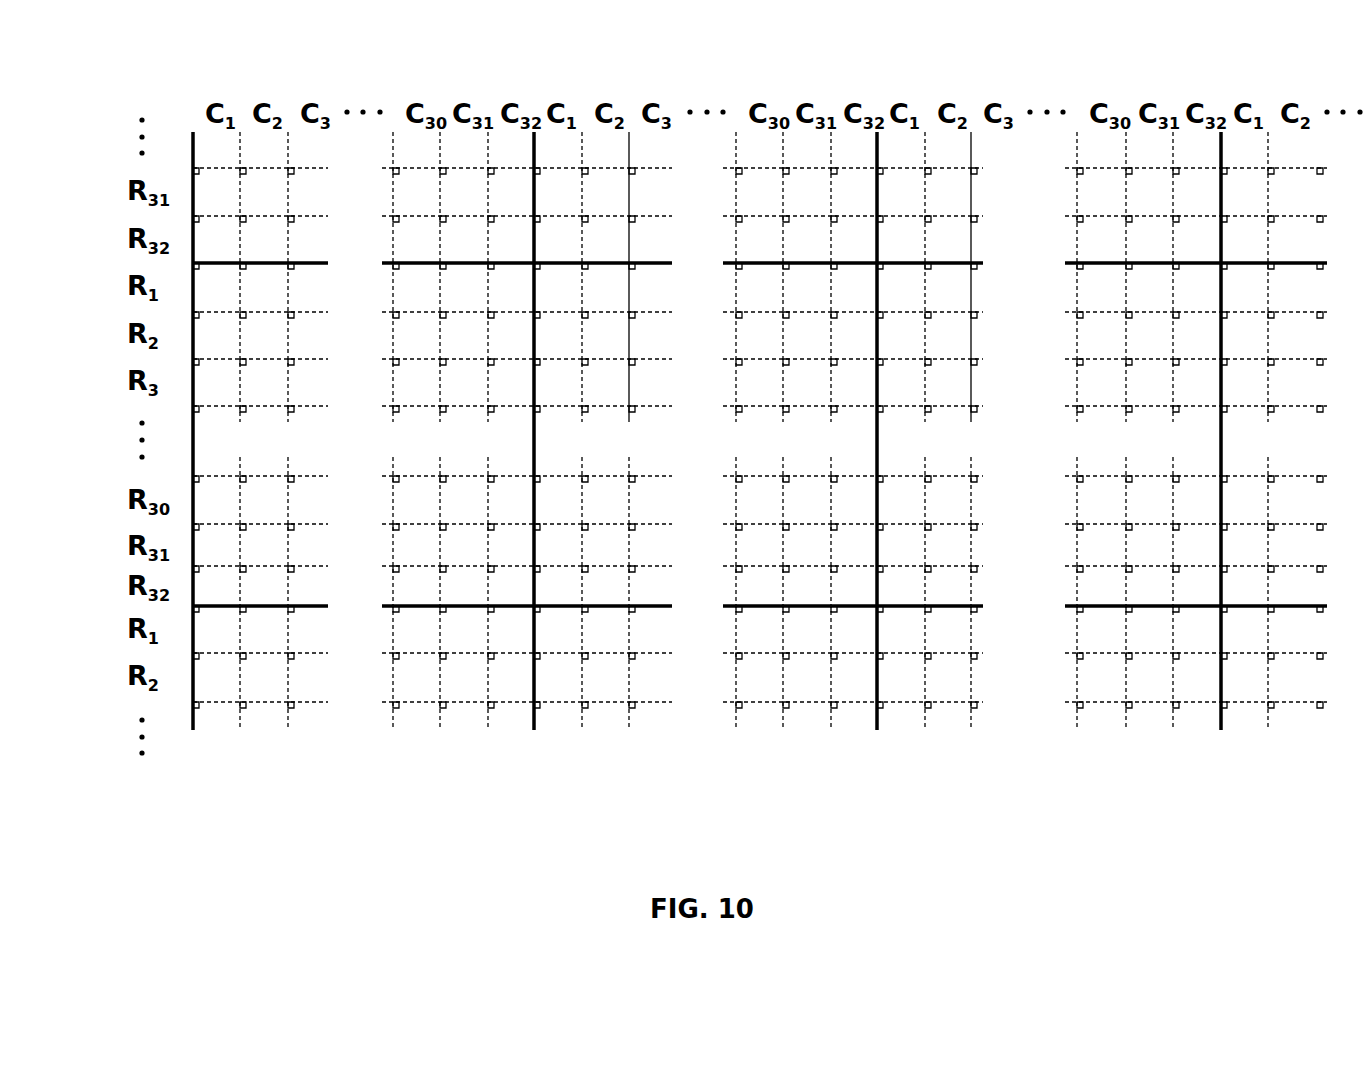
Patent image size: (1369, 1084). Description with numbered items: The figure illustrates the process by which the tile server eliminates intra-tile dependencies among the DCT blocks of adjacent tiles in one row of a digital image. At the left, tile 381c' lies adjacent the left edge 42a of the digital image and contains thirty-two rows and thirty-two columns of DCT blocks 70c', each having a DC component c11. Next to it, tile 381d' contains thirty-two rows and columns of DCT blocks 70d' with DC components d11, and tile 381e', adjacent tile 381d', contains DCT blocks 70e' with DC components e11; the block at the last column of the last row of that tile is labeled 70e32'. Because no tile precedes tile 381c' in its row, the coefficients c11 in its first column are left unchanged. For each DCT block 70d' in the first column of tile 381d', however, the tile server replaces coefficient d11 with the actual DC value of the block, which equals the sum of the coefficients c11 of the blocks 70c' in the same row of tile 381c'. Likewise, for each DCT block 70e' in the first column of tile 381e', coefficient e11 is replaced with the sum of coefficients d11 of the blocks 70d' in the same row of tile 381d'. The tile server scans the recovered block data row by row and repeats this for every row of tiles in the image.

The left edge 42a is at (220, 456).
The DCT blocks 70c' is at (329, 438).
The DCT blocks 70d' is at (612, 438).
The DCT blocks 70e' is at (895, 438).
The pixel sub-array e32 70e32' is at (1170, 438).
The tile 381c' is at (275, 431).
The tile 381d' is at (799, 431).
The tile 381e' is at (1130, 431).
The DC component c11 is at (296, 431).
The DC component d11 is at (611, 431).
The DC component e11 is at (1002, 431).